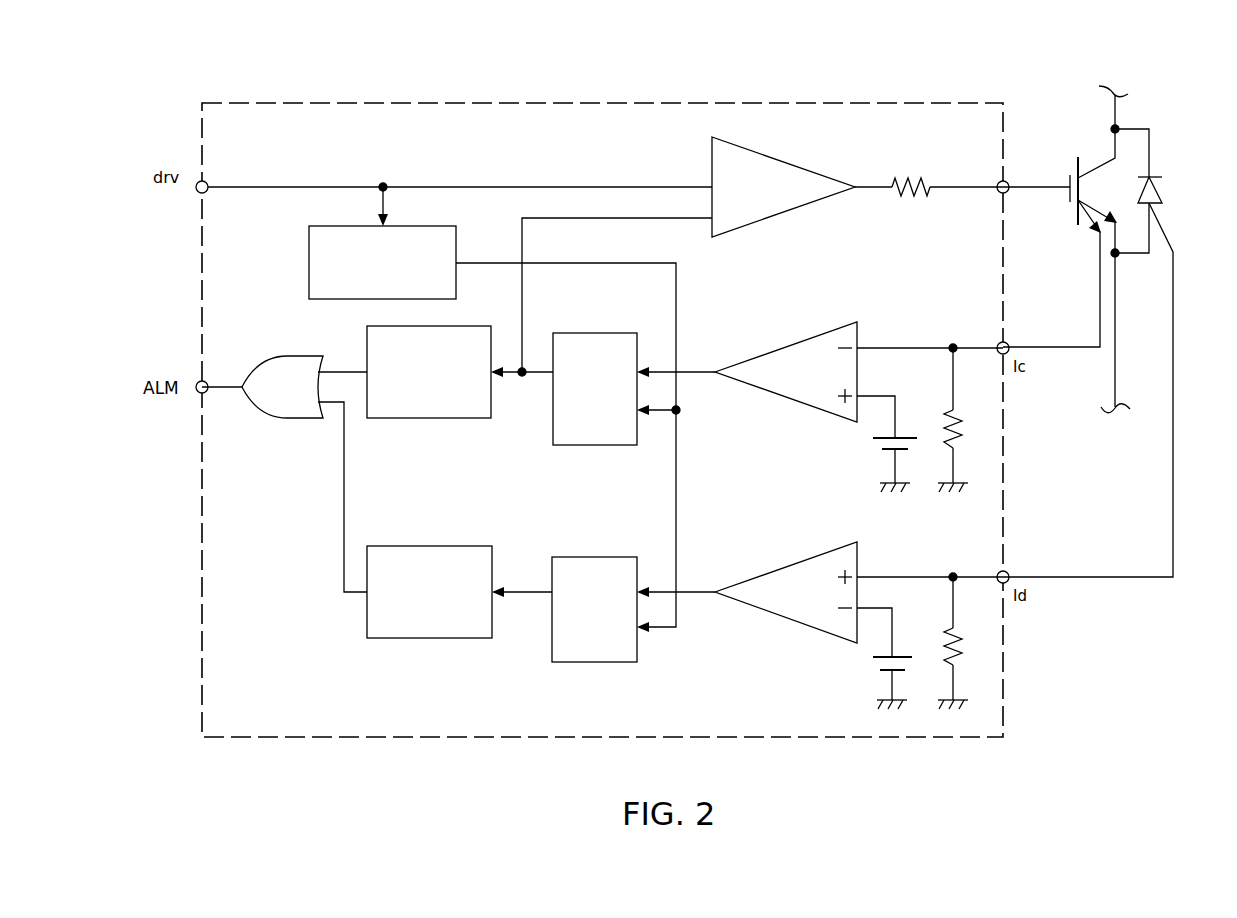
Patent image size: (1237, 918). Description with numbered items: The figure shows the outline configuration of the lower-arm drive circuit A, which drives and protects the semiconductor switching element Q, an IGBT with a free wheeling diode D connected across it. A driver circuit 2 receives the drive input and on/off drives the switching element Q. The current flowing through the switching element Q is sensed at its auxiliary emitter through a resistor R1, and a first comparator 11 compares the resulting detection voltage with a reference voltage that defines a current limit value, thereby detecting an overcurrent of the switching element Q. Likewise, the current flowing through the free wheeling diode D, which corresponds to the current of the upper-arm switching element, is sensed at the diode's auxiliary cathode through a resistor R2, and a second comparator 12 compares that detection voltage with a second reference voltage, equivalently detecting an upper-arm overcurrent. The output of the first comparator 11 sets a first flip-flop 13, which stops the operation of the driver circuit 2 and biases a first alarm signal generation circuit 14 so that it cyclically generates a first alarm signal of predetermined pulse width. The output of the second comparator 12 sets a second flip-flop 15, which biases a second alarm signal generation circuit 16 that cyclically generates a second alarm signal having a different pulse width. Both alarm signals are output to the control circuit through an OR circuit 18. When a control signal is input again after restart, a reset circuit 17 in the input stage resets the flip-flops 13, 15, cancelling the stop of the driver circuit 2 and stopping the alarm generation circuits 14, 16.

The lower-arm drive circuit A is at (884, 124).
The driver circuit 2 is at (823, 176).
The first comparator 11 is at (809, 338).
The second comparator 12 is at (808, 559).
The first flip-flop 13 is at (598, 333).
The first alarm signal generation circuit 14 is at (435, 418).
The second flip-flop 15 is at (598, 557).
The second alarm signal generation circuit 16 is at (416, 638).
The reset circuit 17 is at (309, 263).
The OR circuit 18 is at (278, 418).
The semiconductor switching element Q is at (1066, 249).
The free wheeling diode D is at (1093, 353).
The resistor R1 is at (961, 420).
The resistor R2 is at (961, 643).